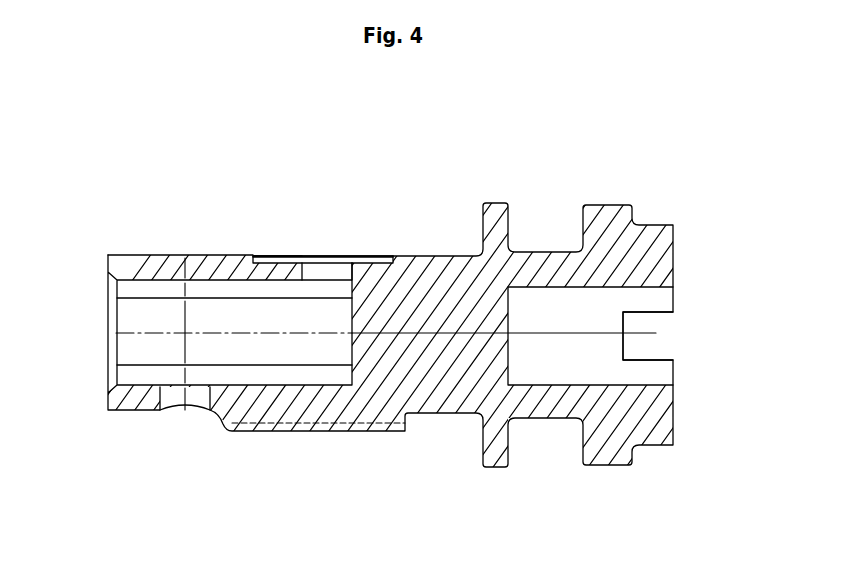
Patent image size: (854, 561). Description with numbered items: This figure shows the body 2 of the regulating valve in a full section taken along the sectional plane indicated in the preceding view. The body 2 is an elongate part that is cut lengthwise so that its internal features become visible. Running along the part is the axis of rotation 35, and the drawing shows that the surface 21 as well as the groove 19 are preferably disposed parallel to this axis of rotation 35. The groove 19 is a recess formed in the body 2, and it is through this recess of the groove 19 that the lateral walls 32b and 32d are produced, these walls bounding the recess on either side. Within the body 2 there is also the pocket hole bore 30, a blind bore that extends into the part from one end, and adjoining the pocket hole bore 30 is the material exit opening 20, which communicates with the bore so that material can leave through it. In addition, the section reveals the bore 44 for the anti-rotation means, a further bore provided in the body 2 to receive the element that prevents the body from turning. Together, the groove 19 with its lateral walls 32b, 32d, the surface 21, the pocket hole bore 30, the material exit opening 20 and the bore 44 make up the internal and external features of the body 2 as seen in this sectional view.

The body 2 is at (537, 155).
The groove 19 is at (299, 257).
The material exit opening 20 is at (322, 272).
The surface 21 is at (337, 255).
The pocket hole bore 30 is at (245, 352).
The lateral wall 32b is at (370, 260).
The lateral wall 32d is at (255, 257).
The axis of rotation 35 is at (648, 337).
The bore for the anti-rotation means 44 is at (170, 394).